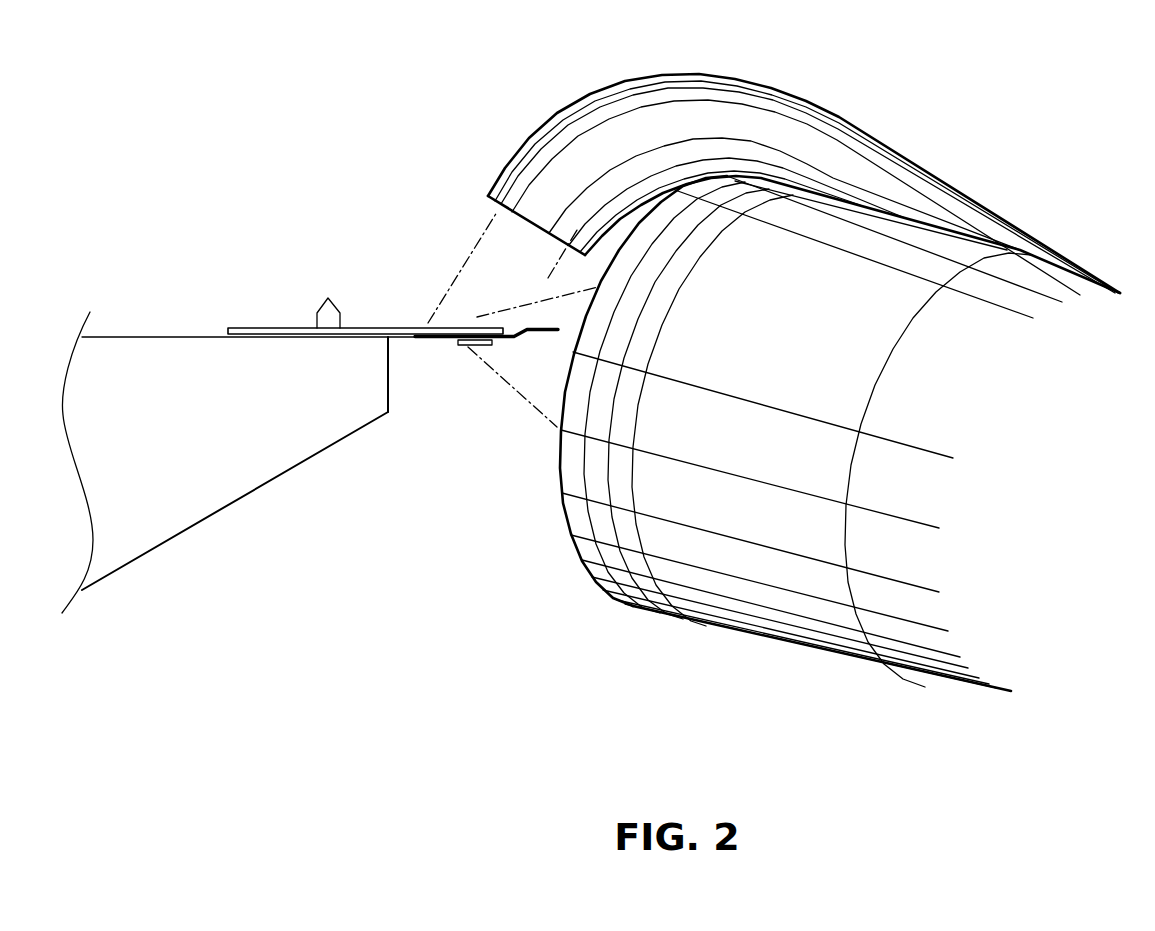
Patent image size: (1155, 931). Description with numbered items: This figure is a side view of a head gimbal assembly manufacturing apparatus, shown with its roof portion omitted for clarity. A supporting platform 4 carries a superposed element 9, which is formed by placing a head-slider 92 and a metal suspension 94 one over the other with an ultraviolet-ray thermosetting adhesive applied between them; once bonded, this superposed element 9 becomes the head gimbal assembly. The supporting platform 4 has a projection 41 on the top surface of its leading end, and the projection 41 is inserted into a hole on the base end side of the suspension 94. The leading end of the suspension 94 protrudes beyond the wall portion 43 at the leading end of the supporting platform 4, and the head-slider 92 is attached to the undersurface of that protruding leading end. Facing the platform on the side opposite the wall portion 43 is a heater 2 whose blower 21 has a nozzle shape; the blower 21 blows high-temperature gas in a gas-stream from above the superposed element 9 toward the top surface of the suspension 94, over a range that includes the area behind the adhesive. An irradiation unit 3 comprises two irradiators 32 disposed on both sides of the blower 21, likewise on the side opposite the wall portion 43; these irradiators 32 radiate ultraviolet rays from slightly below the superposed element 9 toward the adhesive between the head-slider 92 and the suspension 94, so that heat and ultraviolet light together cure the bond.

The heater 2 is at (1039, 121).
The blower 21 is at (738, 88).
The irradiation unit 3 is at (646, 659).
The irradiator 32 is at (782, 622).
The supporting platform 4 is at (220, 483).
The projection 41 is at (323, 302).
The wall portion 43 is at (393, 396).
The superposed element 9 is at (377, 308).
The suspension 94 is at (430, 328).
The head-slider 92 is at (467, 350).